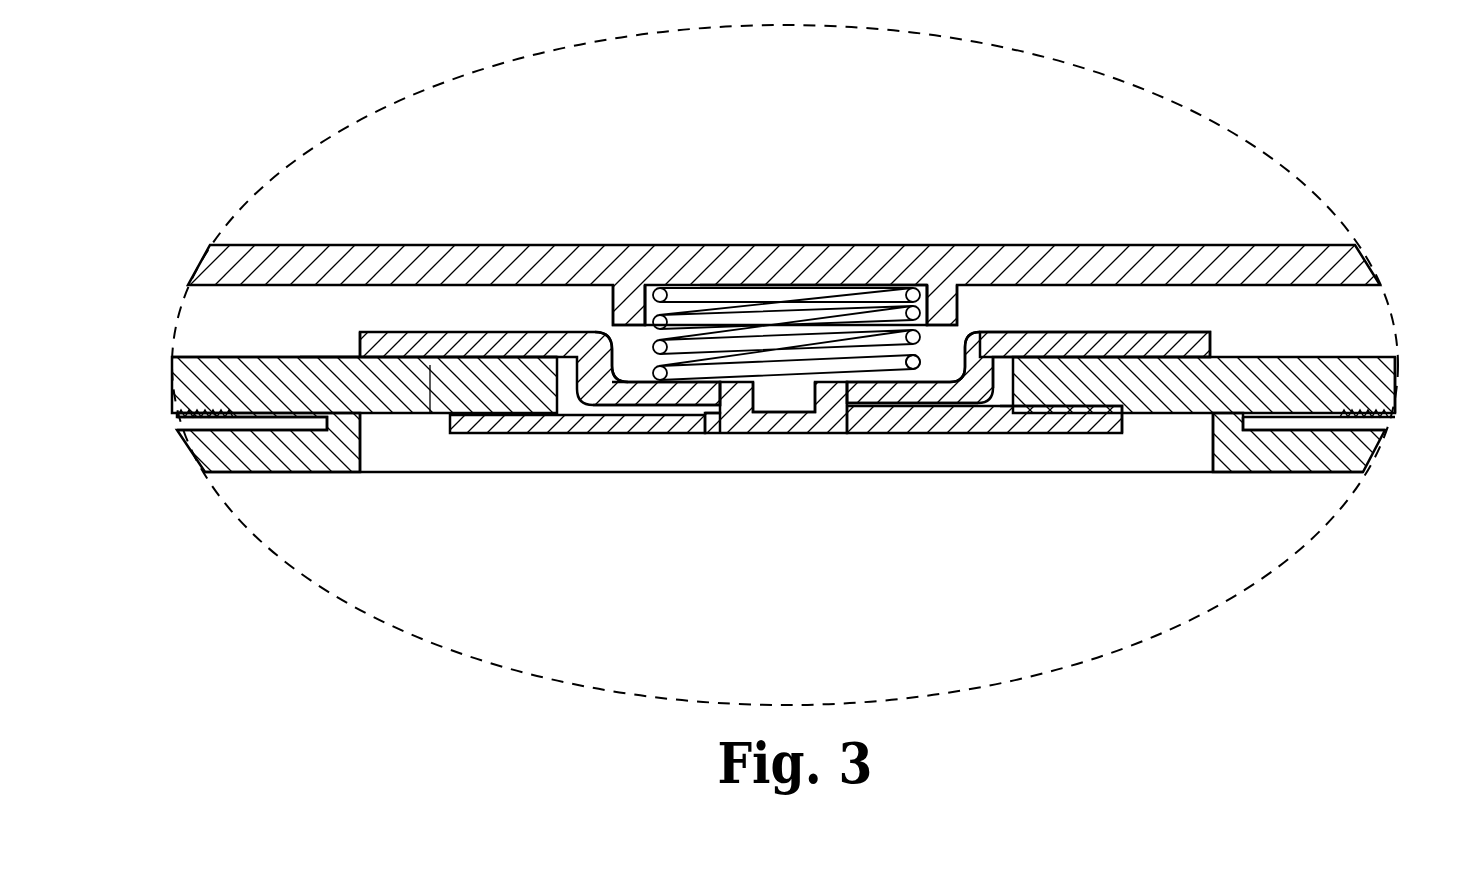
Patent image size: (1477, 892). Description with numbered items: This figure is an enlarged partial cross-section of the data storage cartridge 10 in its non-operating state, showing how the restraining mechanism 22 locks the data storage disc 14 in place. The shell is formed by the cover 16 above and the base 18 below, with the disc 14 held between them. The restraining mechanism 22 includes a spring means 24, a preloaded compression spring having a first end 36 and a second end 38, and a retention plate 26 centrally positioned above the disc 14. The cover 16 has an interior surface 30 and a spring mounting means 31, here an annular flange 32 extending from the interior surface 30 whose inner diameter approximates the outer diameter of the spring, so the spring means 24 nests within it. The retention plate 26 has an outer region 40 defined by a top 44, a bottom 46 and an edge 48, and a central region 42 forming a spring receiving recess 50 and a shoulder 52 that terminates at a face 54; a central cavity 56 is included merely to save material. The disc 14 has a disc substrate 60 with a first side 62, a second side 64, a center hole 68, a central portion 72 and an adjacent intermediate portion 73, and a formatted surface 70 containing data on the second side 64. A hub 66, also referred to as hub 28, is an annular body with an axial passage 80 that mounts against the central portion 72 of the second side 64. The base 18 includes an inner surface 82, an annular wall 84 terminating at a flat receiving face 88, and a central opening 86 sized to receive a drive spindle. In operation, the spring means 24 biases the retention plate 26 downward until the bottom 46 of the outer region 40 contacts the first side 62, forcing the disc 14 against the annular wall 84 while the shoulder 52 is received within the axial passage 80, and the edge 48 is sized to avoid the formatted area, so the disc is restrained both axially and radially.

The data storage cartridge 10 is at (300, 207).
The data storage disc 14 is at (185, 355).
The cover 16 is at (1058, 246).
The base 18 is at (217, 474).
The restraining mechanism 22 is at (683, 284).
The spring means 24 is at (782, 312).
The retention plate 26 is at (1185, 333).
The hub 28 is at (975, 425).
The interior surface 30 is at (300, 288).
The spring mounting means 31 is at (958, 305).
The annular flange 32 is at (615, 325).
The first end 36 is at (838, 290).
The second end 38 is at (875, 365).
The outer region 40 is at (1077, 345).
The central region 42 is at (605, 335).
The top 44 is at (488, 345).
The bottom 46 is at (430, 365).
The edge 48 is at (360, 348).
The spring receiving recess 50 is at (628, 367).
The shoulder 52 is at (733, 415).
The face 54 is at (826, 440).
The central cavity 56 is at (783, 397).
The disc substrate 60 is at (1285, 390).
The first side 62 is at (1353, 353).
The second side 64 is at (1285, 440).
The hub 66 is at (1003, 395).
The center hole 68 is at (577, 400).
The formatted surface 70 is at (1370, 445).
The central portion 72 is at (1140, 417).
The intermediate portion 73 is at (1380, 398).
The axial passage 80 is at (860, 425).
The inner surface 82 is at (180, 427).
The annular wall 84 is at (327, 422).
The central opening 86 is at (360, 455).
The flat receiving face 88 is at (337, 403).